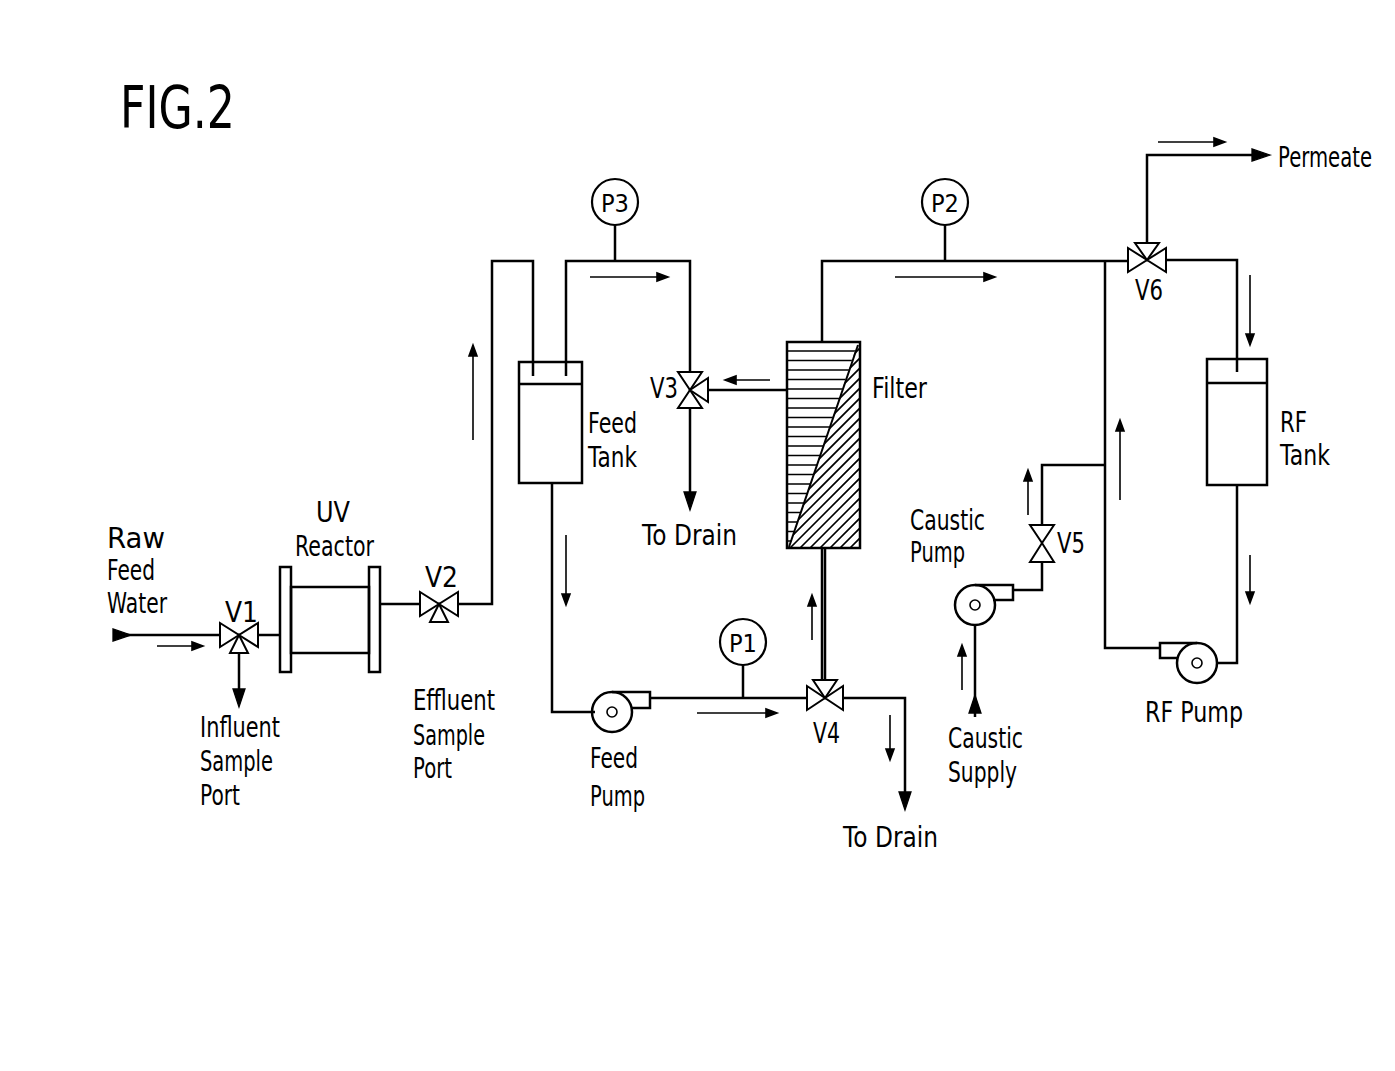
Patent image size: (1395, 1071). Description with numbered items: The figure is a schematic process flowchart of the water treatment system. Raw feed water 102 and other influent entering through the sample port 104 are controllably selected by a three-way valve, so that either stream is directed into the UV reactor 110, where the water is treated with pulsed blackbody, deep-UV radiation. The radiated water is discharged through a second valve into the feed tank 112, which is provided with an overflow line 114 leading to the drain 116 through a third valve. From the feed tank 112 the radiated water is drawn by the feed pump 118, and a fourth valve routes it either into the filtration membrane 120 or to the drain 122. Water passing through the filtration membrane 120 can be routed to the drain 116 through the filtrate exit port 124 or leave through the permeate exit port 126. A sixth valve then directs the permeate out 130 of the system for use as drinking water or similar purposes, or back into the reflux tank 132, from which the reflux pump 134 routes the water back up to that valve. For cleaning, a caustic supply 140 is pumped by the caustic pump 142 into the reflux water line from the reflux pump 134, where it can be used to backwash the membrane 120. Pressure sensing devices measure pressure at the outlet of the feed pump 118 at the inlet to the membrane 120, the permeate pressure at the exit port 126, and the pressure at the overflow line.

The raw feed water 102 is at (120, 646).
The sample port 104 is at (245, 855).
The UV reactor 110 is at (355, 637).
The feed tank 112 is at (570, 440).
The overflow line 114 is at (670, 261).
The drain 116 is at (715, 587).
The feed pump 118 is at (618, 689).
The filtration membrane 120 is at (917, 442).
The drain 122 is at (908, 892).
The filtrate exit port 124 is at (748, 400).
The permeate exit port 126 is at (888, 260).
The permeate out 130 is at (1195, 160).
The reflux tank 132 is at (1258, 444).
The reflux pump 134 is at (1183, 641).
The caustic supply 140 is at (1008, 830).
The caustic pump 142 is at (954, 604).